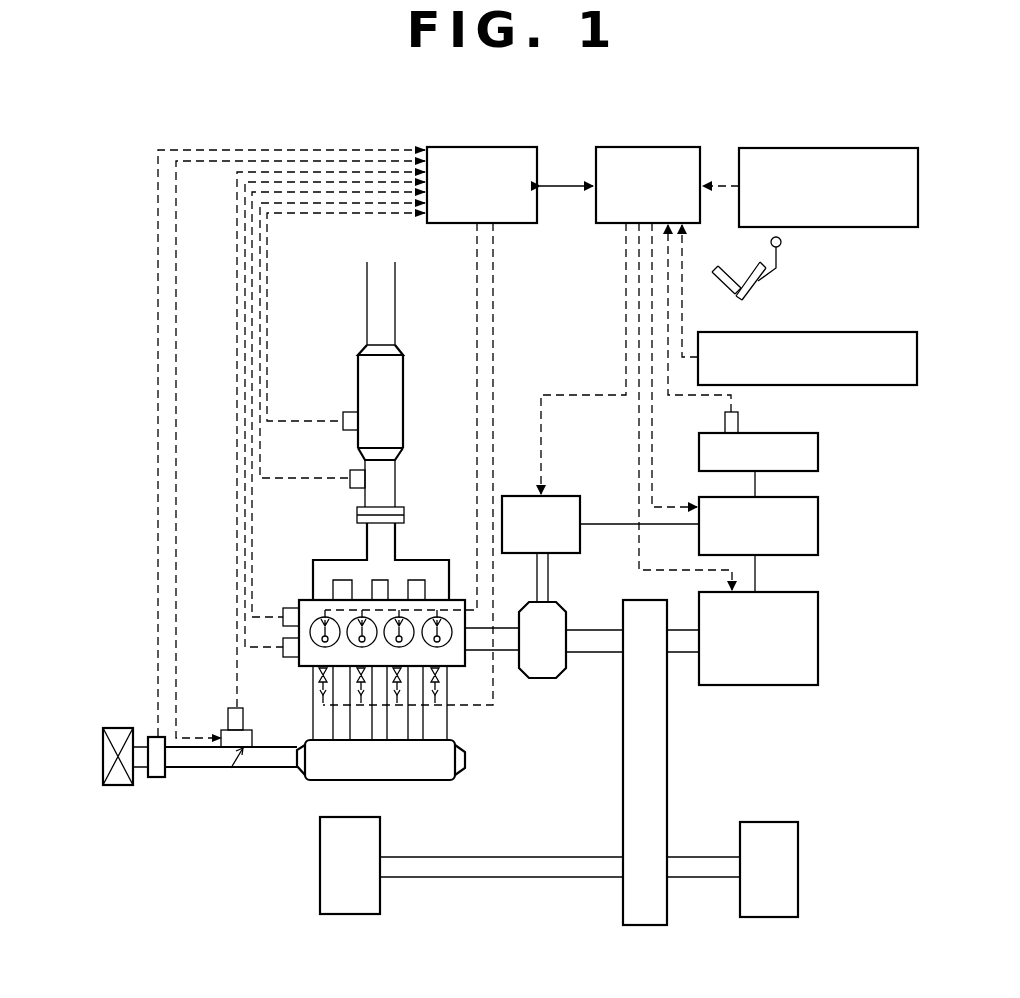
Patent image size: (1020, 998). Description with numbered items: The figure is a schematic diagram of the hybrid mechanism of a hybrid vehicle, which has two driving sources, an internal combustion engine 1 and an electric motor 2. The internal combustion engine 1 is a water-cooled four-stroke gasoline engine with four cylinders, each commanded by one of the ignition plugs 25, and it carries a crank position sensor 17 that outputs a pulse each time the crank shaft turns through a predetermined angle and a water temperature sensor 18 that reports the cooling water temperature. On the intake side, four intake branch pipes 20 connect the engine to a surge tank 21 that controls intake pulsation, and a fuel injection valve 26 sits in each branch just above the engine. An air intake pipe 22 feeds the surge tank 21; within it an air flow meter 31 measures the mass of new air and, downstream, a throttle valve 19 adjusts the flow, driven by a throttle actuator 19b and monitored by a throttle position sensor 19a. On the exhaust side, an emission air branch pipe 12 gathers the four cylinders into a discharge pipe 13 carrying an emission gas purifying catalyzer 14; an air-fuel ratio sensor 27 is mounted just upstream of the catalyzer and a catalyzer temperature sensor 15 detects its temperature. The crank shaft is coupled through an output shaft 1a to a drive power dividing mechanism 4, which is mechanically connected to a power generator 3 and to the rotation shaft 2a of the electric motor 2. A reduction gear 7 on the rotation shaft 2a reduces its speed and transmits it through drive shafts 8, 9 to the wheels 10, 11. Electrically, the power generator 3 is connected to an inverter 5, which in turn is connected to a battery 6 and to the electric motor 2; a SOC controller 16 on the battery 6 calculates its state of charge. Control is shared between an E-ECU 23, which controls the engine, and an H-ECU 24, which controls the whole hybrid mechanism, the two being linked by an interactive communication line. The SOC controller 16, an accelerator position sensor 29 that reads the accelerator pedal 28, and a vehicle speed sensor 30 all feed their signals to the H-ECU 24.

The internal combustion engine 1 is at (300, 668).
The output shaft 1a is at (500, 628).
The electric motor 2 is at (818, 640).
The rotation shaft 2a is at (597, 652).
The power generator 3 is at (570, 496).
The drive power dividing mechanism 4 is at (568, 608).
The inverter 5 is at (818, 528).
The battery 6 is at (818, 452).
The reduction gear 7 is at (667, 762).
The drive shaft 8 is at (520, 870).
The drive shaft 9 is at (707, 870).
The wheel 10 is at (320, 862).
The wheel 11 is at (795, 822).
The emission air branch pipe 12 is at (367, 545).
The discharge pipe 13 is at (367, 300).
The emission gas purifying catalyzer 14 is at (403, 400).
The catalyzer temperature sensor 15 is at (343, 415).
The SOC controller 16 is at (738, 422).
The crank position sensor 17 is at (291, 608).
The water temperature sensor 18 is at (283, 645).
The throttle valve 19 is at (237, 770).
The throttle position sensor 19a is at (228, 718).
The throttle actuator 19b is at (250, 738).
The intake branch pipes 20 is at (447, 725).
The surge tank 21 is at (465, 760).
The air intake pipe 22 is at (280, 770).
The electronic control unit (E-ECU) 23 is at (497, 147).
The electronic control unit (H-ECU) 24 is at (660, 147).
The ignition plugs 25 is at (440, 625).
The fuel injection valve 26 is at (445, 676).
The air-fuel ratio sensor 27 is at (350, 474).
The accelerator pedal 28 is at (745, 292).
The accelerator position sensor 29 is at (856, 148).
The vehicle speed sensor 30 is at (880, 332).
The air flow meter 31 is at (157, 778).